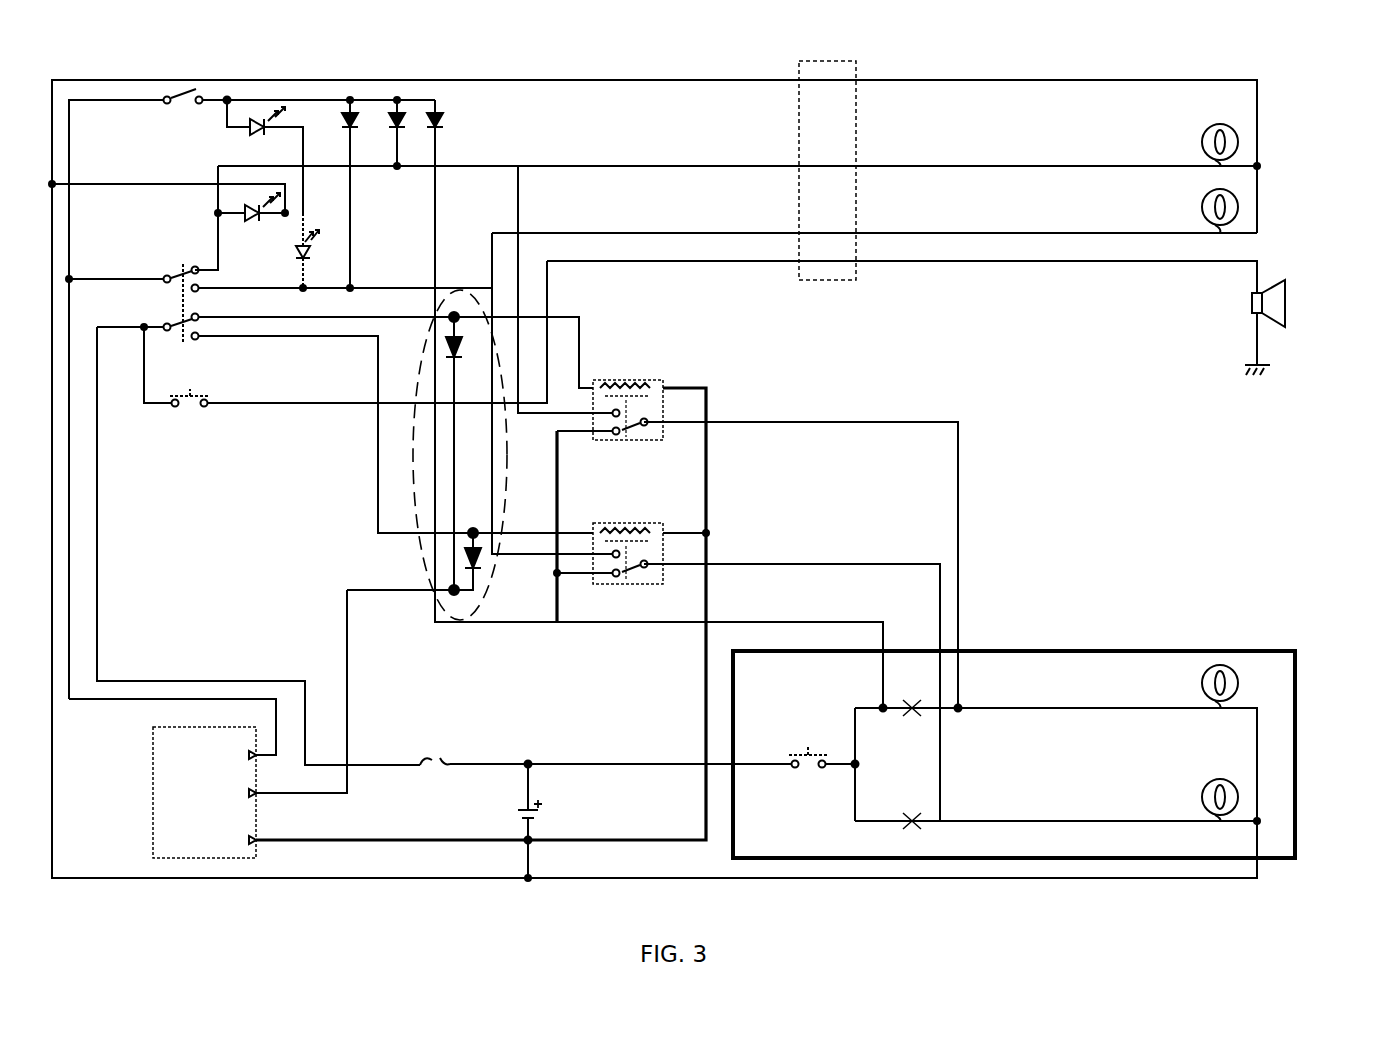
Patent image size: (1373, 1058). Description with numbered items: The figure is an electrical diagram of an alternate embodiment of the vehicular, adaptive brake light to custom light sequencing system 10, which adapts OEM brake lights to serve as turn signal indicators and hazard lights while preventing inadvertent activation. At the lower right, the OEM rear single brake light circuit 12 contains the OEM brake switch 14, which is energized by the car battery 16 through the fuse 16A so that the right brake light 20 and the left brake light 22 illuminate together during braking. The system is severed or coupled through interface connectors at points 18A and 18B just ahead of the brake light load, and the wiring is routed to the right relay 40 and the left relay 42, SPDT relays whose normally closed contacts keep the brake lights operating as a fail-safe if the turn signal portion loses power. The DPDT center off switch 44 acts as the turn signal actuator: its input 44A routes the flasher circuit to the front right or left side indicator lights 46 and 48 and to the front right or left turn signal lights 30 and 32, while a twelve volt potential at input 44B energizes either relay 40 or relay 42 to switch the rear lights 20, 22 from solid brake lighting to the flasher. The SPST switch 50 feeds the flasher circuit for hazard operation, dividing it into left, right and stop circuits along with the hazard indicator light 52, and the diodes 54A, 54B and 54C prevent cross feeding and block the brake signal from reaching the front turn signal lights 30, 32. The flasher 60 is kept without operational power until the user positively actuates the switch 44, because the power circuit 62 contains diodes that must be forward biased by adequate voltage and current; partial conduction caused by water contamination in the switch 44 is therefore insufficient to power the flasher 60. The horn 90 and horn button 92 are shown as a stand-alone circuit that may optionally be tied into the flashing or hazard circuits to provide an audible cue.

The vehicular adaptive brake light to custom light sequencing system 10 is at (1283, 162).
The OEM rear single brake light circuit 12 is at (1298, 764).
The OEM brake switch 14 is at (808, 742).
The car battery 16 is at (522, 815).
The fuse 16A is at (433, 770).
The point 18A is at (912, 714).
The point 18B is at (912, 826).
The right brake light 20 is at (1205, 685).
The left brake light 22 is at (1205, 795).
The front right turn signal light 30 is at (1222, 122).
The front left turn signal light 32 is at (1222, 190).
The right relay 40 is at (655, 380).
The left relay 42 is at (608, 522).
The DPDT center off switch 44 is at (183, 318).
The input of the DPDT switch 44A is at (222, 283).
The input of the DPDT switch 44B is at (224, 329).
The front right side indicator light 46 is at (218, 197).
The front left side indicator light 48 is at (314, 250).
The SPST switch 50 is at (170, 122).
The hazard indicator light 52 is at (262, 148).
The diode 54A is at (350, 110).
The diode 54B is at (397, 110).
The diode 54C is at (437, 112).
The flasher 60 is at (153, 822).
The power circuit 62 is at (428, 552).
The horn 90 is at (1288, 306).
The horn button 92 is at (193, 392).